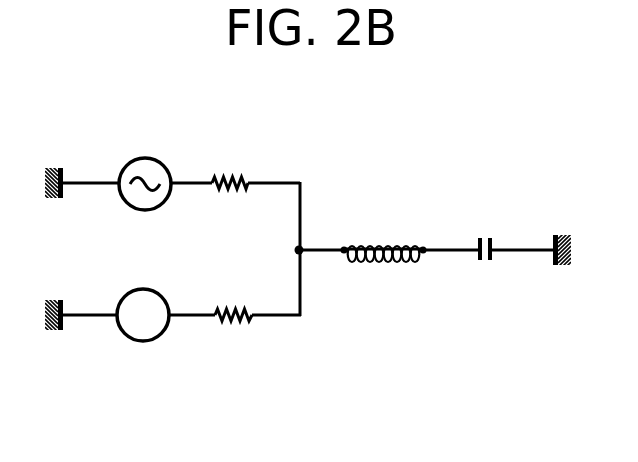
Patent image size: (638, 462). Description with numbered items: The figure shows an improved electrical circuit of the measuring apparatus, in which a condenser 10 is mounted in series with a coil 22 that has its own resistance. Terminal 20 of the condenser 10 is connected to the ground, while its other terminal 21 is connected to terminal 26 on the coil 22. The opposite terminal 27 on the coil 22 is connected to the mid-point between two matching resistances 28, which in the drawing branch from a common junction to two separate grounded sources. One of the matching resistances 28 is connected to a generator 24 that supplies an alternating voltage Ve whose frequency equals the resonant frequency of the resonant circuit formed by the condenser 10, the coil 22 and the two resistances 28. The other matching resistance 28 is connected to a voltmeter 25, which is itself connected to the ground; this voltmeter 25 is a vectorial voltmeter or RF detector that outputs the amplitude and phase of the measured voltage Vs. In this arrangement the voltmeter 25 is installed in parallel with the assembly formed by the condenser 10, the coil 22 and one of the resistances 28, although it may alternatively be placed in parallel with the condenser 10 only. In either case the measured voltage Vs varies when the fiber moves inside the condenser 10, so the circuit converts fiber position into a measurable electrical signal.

The condenser 10 is at (488, 242).
The terminal 20 is at (493, 260).
The terminal 21 is at (478, 258).
The coil 22 is at (395, 245).
The generator 24 is at (144, 158).
The voltmeter 25 is at (143, 332).
The terminal 26 is at (420, 255).
The terminal 27 is at (344, 254).
The matching resistance 28 is at (231, 172).